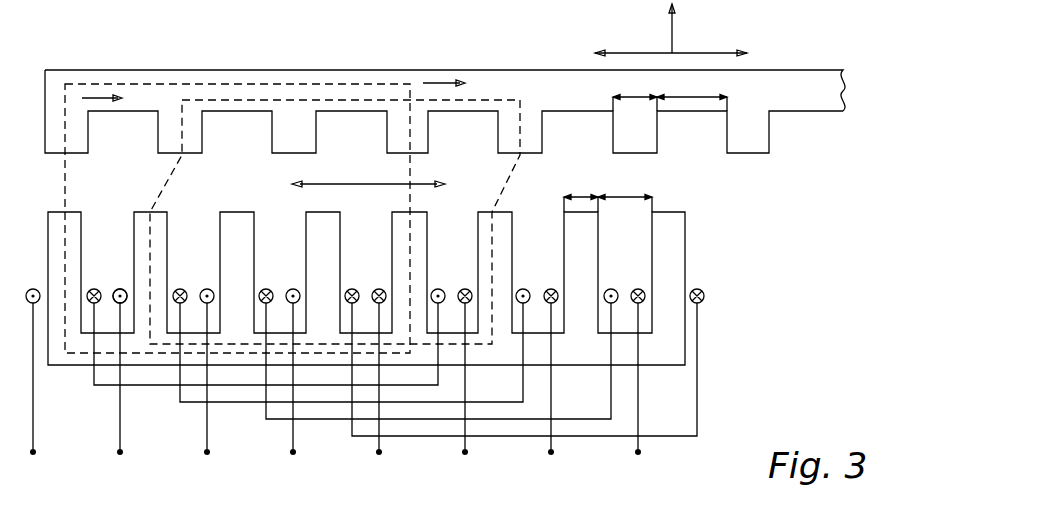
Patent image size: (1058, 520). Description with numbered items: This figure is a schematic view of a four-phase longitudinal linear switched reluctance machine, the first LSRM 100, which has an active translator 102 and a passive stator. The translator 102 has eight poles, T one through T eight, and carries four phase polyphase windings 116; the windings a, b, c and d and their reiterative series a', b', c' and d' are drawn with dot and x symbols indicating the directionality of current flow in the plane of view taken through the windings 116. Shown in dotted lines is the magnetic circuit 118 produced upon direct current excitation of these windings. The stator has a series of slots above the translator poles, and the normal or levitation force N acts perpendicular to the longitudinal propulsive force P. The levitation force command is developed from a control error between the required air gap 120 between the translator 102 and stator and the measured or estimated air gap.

The first LSRM 100 is at (810, 226).
The translator 102 is at (686, 260).
The polyphase windings 116 is at (119, 289).
The magnetic circuit 118 is at (360, 82).
The air gap 120 is at (643, 172).